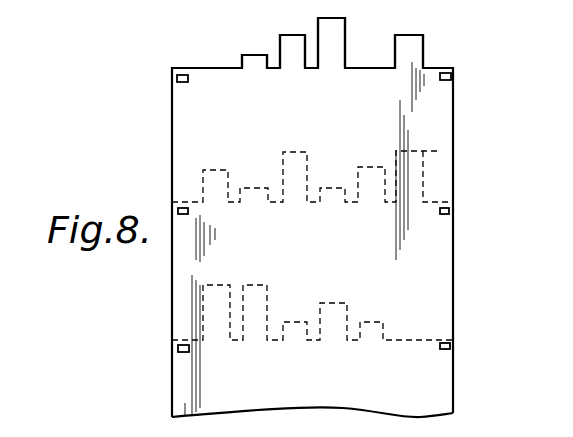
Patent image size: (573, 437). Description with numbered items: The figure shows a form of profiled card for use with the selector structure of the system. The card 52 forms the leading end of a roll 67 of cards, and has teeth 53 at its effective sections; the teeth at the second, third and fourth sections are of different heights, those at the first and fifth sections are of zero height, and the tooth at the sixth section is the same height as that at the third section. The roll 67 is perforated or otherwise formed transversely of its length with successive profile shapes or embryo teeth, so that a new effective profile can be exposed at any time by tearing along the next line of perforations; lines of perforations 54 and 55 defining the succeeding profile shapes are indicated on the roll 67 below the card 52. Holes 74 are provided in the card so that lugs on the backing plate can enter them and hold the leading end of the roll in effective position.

The card 52 is at (435, 118).
The teeth 53 is at (330, 25).
The line of perforations 54 is at (423, 192).
The line of perforations 55 is at (385, 325).
The roll 67 is at (226, 240).
The holes 74 is at (177, 78).